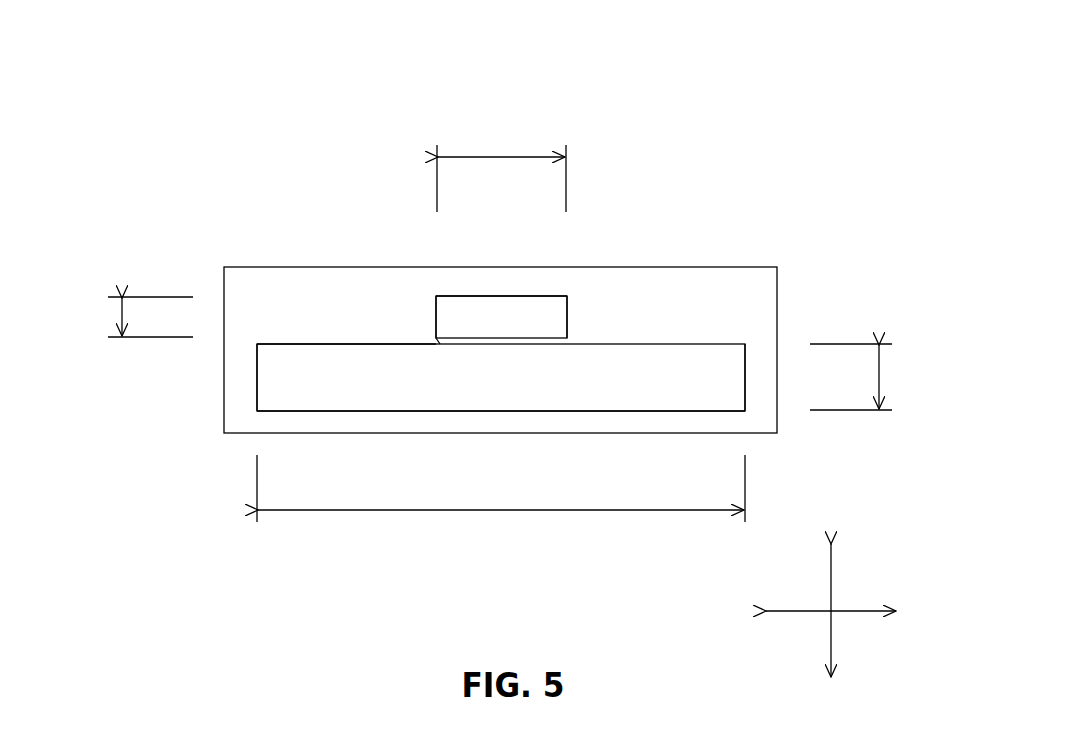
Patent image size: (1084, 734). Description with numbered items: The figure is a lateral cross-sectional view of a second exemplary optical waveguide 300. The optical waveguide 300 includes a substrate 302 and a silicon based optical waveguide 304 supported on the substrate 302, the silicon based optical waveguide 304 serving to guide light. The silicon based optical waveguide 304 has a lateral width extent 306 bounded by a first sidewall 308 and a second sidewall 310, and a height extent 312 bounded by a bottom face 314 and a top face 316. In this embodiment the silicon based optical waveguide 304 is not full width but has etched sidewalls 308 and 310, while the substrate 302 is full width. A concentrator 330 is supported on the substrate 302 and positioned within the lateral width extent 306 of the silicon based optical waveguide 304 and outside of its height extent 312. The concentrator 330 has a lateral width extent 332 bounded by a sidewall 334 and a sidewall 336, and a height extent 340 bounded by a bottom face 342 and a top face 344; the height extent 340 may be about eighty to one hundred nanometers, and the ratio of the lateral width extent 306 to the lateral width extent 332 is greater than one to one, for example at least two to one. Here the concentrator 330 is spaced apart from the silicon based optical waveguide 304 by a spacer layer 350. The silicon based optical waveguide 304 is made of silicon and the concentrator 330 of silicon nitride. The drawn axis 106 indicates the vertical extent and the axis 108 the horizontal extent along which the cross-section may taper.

The optical waveguide 300 is at (731, 126).
The substrate 302 is at (752, 423).
The silicon based optical waveguide 304 is at (706, 330).
The lateral width extent 306 is at (500, 512).
The first sidewall 308 is at (256, 397).
The second sidewall 310 is at (747, 360).
The height extent 312 is at (883, 378).
The bottom face 314 is at (572, 411).
The top face 316 is at (293, 343).
The concentrator 330 is at (535, 290).
The lateral width extent 332 is at (499, 156).
The sidewall 334 is at (433, 303).
The sidewall 336 is at (567, 318).
The height extent 340 is at (117, 318).
The bottom face 342 is at (470, 340).
The top face 344 is at (497, 296).
The spacer layer 350 is at (428, 338).
The axis 106 is at (833, 583).
The axis 108 is at (860, 614).